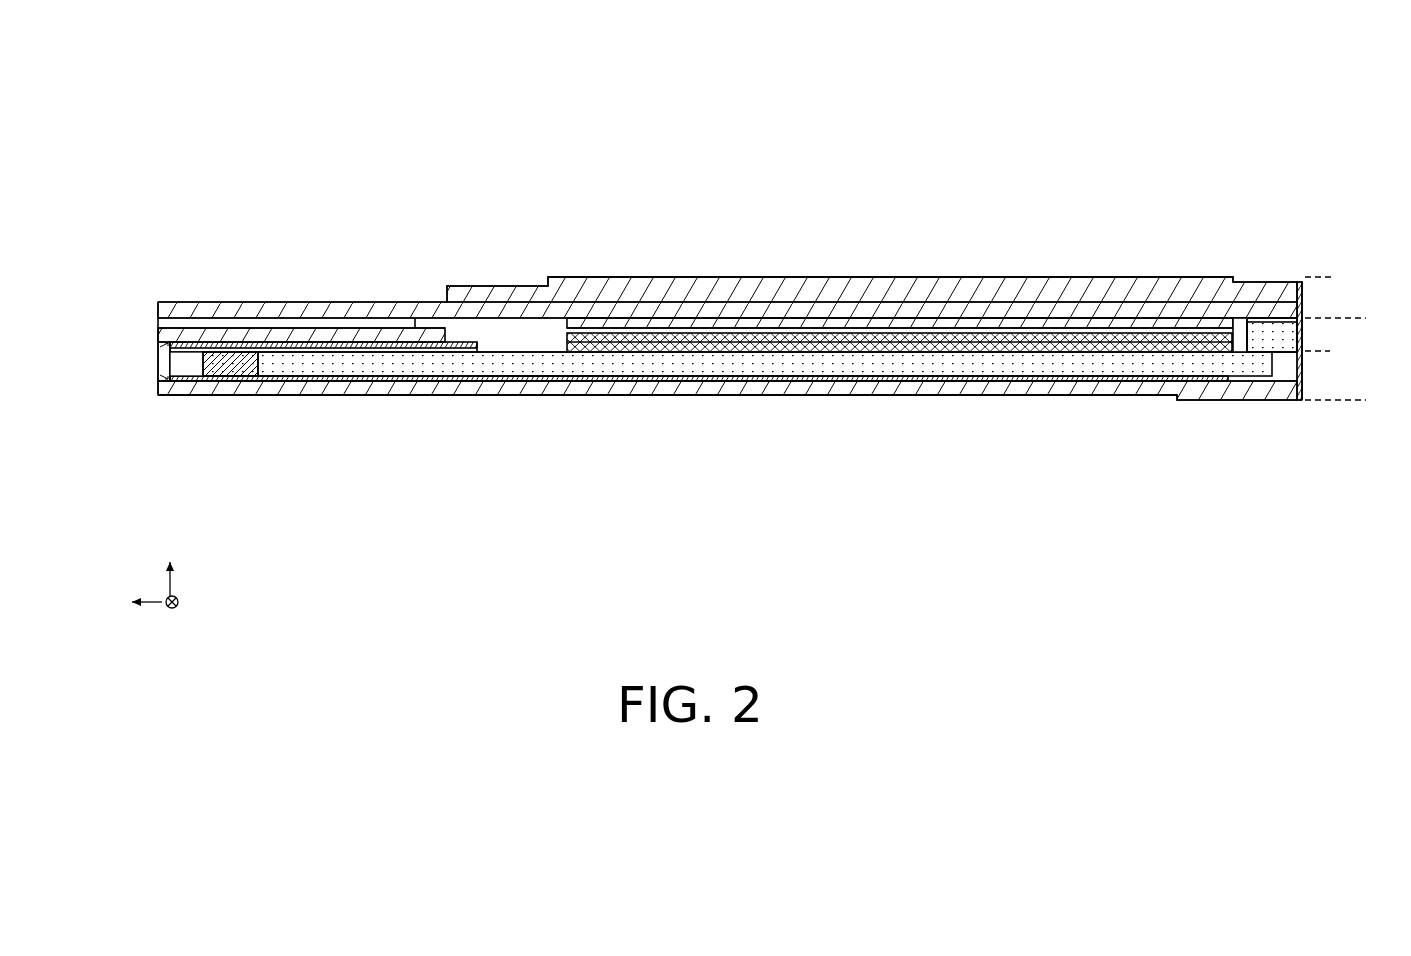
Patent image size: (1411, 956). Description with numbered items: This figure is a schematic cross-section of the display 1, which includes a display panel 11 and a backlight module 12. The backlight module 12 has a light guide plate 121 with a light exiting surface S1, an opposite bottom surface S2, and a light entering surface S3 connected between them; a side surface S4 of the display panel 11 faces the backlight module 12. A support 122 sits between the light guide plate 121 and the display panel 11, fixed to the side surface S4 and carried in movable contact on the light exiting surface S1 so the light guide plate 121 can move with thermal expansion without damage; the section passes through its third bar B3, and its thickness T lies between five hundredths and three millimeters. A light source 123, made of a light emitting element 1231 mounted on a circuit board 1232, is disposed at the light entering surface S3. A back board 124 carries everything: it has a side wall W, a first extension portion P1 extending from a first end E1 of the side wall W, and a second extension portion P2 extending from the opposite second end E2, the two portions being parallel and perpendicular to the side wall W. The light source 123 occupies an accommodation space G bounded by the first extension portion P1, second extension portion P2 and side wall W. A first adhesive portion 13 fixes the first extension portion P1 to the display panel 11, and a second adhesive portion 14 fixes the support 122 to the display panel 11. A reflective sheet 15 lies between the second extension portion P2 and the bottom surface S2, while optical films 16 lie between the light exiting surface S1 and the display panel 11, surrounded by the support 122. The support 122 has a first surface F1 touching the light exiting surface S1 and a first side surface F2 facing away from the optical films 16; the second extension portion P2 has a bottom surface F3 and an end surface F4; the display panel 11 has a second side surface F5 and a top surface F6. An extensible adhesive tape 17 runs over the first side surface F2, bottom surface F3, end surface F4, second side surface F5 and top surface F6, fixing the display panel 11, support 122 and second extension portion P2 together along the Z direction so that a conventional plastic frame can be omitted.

The display 1 is at (128, 92).
The display panel 11 is at (1333, 277).
The backlight module 12 is at (1366, 318).
The first adhesive portion 13 is at (347, 326).
The second adhesive portion 14 is at (1162, 322).
The reflective sheet 15 is at (666, 383).
The optical film 16 is at (598, 352).
The adhesive tape 17 is at (1240, 320).
The light guide plate 121 is at (775, 368).
The support 122 is at (1271, 325).
The light source 123 is at (323, 428).
The light emitting element 1231 is at (284, 356).
The circuit board 1232 is at (376, 356).
The back board 124 is at (663, 303).
The first extension portion P1 is at (255, 337).
The first end E1 is at (157, 344).
The side wall W is at (157, 360).
The second end E2 is at (167, 379).
The second extension portion P2 is at (693, 391).
The accommodation space G is at (186, 370).
The thickness T is at (1330, 318).
The light exiting surface S1 is at (506, 346).
The bottom surface S2 is at (526, 374).
The light entering surface S3 is at (261, 365).
The side surface S4 is at (1156, 333).
The first surface F1 is at (1229, 362).
The first side surface F2 is at (1263, 345).
The bottom surface F3 is at (1012, 397).
The end surface F4 is at (1291, 392).
The second side surface F5 is at (1292, 296).
The top surface F6 is at (1068, 287).
The third bar B3 is at (1165, 472).